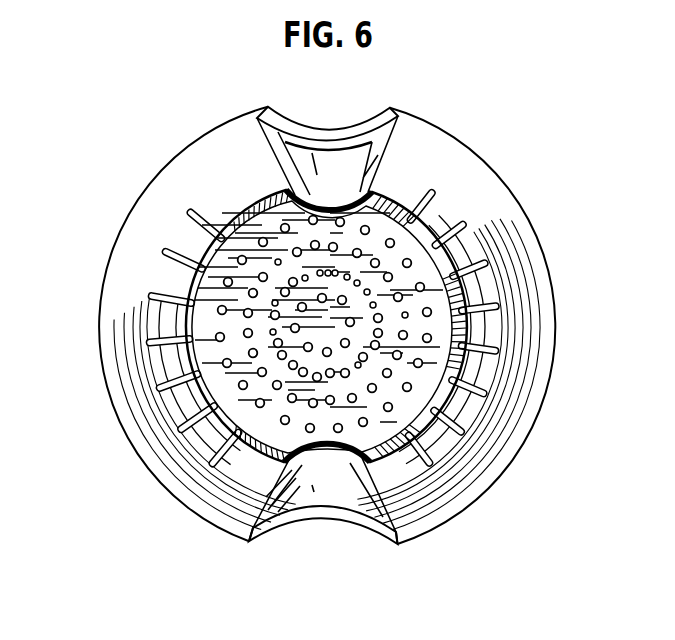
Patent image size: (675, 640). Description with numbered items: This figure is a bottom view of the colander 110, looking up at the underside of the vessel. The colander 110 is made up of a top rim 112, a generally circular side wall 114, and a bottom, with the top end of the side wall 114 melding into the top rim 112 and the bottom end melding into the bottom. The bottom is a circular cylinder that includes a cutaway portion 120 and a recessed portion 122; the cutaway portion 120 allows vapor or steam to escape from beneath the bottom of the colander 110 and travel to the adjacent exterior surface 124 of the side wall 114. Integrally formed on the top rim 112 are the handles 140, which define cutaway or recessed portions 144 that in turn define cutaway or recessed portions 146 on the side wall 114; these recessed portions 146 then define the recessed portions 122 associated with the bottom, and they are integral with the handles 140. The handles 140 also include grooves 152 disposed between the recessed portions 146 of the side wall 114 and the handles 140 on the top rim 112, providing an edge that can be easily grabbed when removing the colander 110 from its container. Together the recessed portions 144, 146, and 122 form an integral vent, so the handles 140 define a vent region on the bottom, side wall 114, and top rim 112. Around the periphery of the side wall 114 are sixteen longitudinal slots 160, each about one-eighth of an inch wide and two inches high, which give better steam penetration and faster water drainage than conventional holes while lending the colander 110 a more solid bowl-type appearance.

The colander 110 is at (543, 313).
The top rim 112 is at (483, 158).
The circular side wall 114 is at (152, 203).
The cutaway portion 120 is at (163, 324).
The recessed portion 122 is at (255, 530).
The exterior surface 124 is at (224, 173).
The handle 140 is at (347, 128).
The recessed portion 144 is at (309, 117).
The recessed portion 146 is at (313, 497).
The groove 152 is at (363, 520).
The longitudinal slot 160 is at (455, 432).